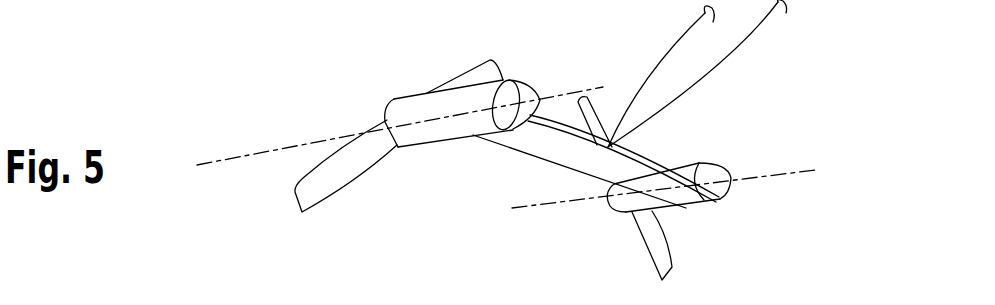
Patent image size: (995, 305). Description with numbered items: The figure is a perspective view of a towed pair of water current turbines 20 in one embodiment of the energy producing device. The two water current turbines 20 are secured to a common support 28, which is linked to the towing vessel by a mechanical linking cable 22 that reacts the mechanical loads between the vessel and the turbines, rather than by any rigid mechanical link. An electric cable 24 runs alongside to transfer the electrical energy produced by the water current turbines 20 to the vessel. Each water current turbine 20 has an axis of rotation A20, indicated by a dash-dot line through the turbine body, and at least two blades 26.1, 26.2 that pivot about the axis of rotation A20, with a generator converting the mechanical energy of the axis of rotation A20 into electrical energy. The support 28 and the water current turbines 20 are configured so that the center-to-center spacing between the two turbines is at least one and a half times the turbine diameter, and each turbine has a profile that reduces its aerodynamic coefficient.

The water current turbine 20 is at (403, 100).
The axis of rotation A20 is at (288, 144).
The mechanical linking cable 22 is at (658, 68).
The electric cable 24 is at (746, 42).
The blade 26.1 is at (304, 185).
The blade 26.2 is at (477, 77).
The support 28 is at (510, 150).